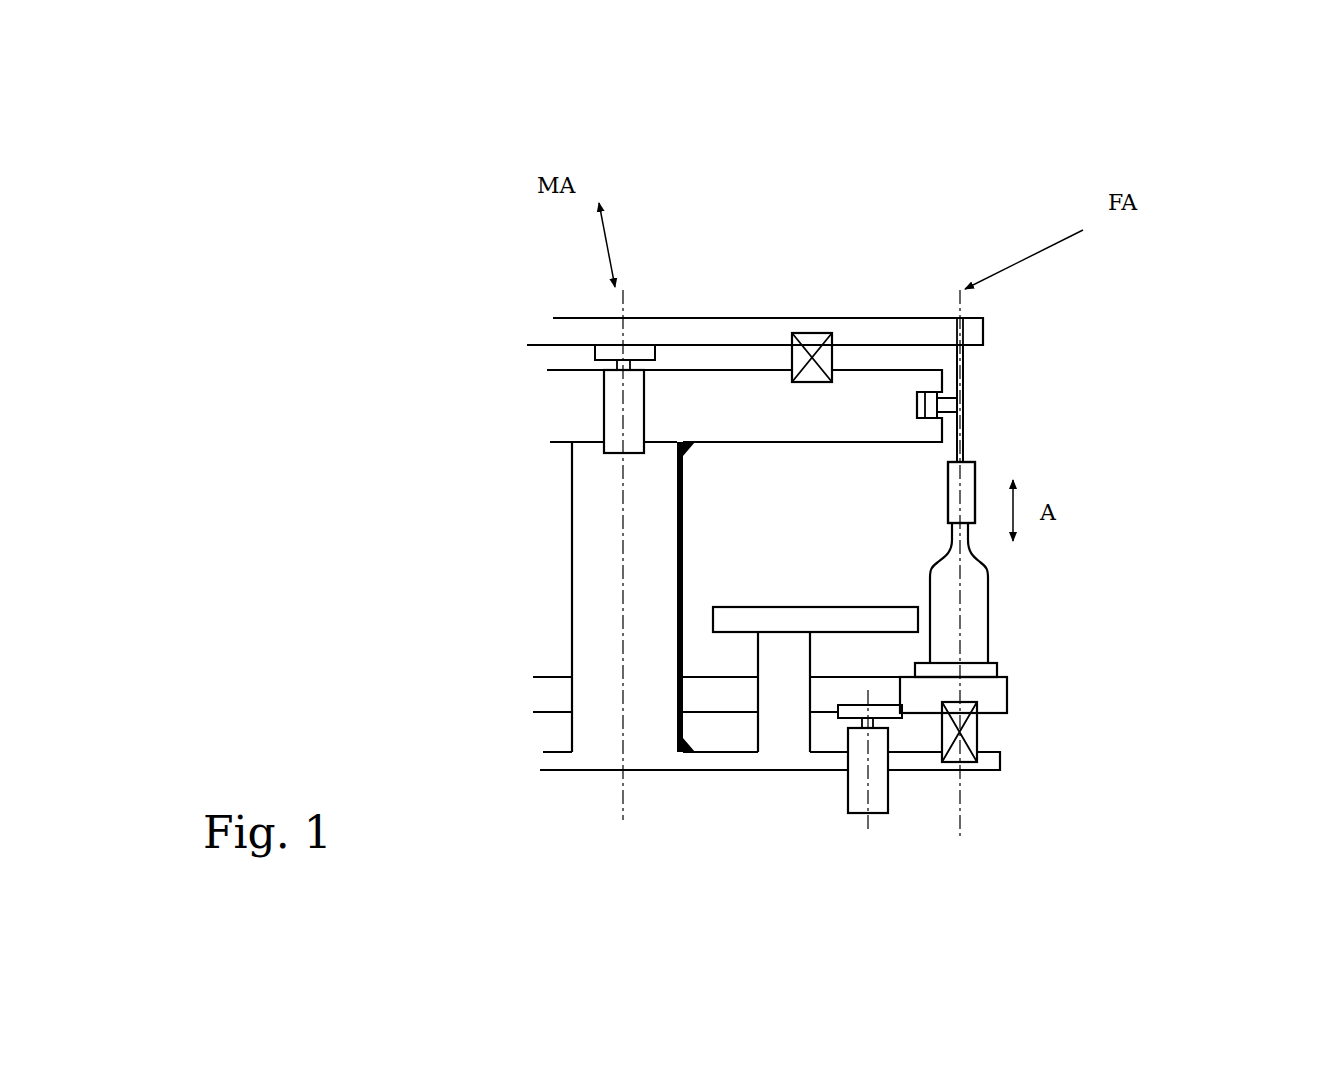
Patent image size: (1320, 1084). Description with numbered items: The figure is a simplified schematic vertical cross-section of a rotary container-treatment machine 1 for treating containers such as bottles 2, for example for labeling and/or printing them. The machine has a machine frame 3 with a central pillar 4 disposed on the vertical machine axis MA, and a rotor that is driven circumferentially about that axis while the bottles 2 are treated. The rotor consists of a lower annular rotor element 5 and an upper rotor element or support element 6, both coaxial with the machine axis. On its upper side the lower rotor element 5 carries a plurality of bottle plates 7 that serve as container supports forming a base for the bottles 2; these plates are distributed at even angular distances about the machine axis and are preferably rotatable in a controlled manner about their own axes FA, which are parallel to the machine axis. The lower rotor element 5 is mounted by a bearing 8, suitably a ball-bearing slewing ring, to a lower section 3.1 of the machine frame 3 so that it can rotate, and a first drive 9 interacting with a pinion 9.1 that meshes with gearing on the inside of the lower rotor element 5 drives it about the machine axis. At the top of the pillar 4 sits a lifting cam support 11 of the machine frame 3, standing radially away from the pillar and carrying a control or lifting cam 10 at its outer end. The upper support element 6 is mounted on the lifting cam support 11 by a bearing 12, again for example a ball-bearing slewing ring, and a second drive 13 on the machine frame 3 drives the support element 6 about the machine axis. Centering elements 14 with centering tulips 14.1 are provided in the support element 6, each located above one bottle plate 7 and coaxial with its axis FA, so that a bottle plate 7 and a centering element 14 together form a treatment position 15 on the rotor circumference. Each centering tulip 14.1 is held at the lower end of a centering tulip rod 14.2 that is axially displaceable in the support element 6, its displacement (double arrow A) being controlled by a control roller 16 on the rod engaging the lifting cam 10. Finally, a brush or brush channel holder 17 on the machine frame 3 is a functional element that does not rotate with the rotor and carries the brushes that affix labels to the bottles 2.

The container-treatment machine 1 is at (366, 286).
The bottle 2 is at (977, 593).
The machine frame 3 is at (496, 723).
The lower section of the machine frame 3.1 is at (692, 760).
The central pillar 4 is at (583, 593).
The lower annular rotor element 5 is at (1007, 703).
The upper support element 6 is at (727, 333).
The bottle plate 7 is at (1000, 666).
The bearing 8 is at (967, 730).
The first drive 9 is at (882, 788).
The pinion 9.1 is at (858, 714).
The lifting cam 10 is at (952, 388).
The lifting cam support 11 is at (835, 424).
The bearing 12 is at (812, 345).
The second drive 13 is at (617, 412).
The centering element 14 is at (1017, 437).
The centering tulip 14.1 is at (952, 483).
The centering tulip rod 14.2 is at (985, 362).
The treatment position 15 is at (1065, 542).
The control roller 16 is at (921, 390).
The brush holder 17 is at (797, 618).